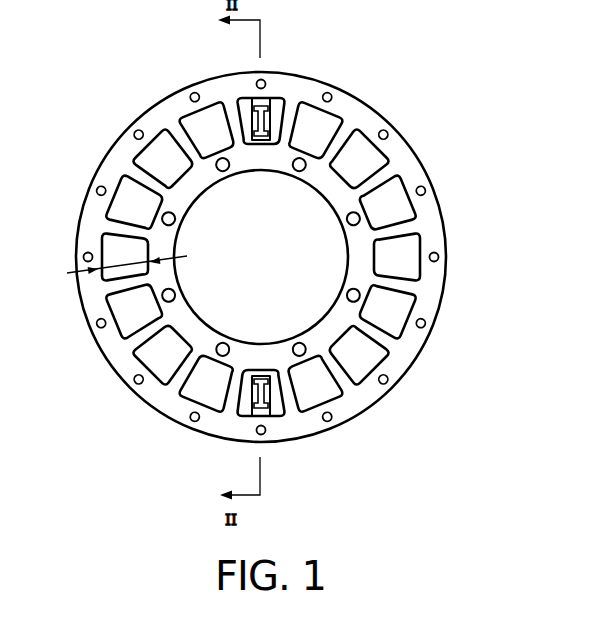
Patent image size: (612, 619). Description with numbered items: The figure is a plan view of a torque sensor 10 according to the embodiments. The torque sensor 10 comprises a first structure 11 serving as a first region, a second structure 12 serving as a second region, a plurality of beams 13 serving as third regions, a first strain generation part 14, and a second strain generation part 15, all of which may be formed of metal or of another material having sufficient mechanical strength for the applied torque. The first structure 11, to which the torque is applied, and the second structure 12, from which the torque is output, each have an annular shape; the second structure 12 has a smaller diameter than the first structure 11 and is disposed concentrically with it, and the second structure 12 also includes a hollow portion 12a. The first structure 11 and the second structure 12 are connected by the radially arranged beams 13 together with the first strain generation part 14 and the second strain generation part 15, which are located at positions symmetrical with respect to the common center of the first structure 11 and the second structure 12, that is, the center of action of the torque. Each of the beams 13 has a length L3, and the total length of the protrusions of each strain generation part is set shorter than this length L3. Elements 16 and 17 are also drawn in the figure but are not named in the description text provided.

The torque sensor 10 is at (163, 70).
The first structure 11 is at (125, 148).
The second structure 12 is at (167, 233).
The hollow portion 12a is at (330, 260).
The beams 13 is at (128, 283).
The first strain generation part 14 is at (281, 108).
The second strain generation part 15 is at (275, 405).
The first pin 16 is at (254, 118).
The second pin 17 is at (256, 392).
The length of each beam L3 is at (123, 265).